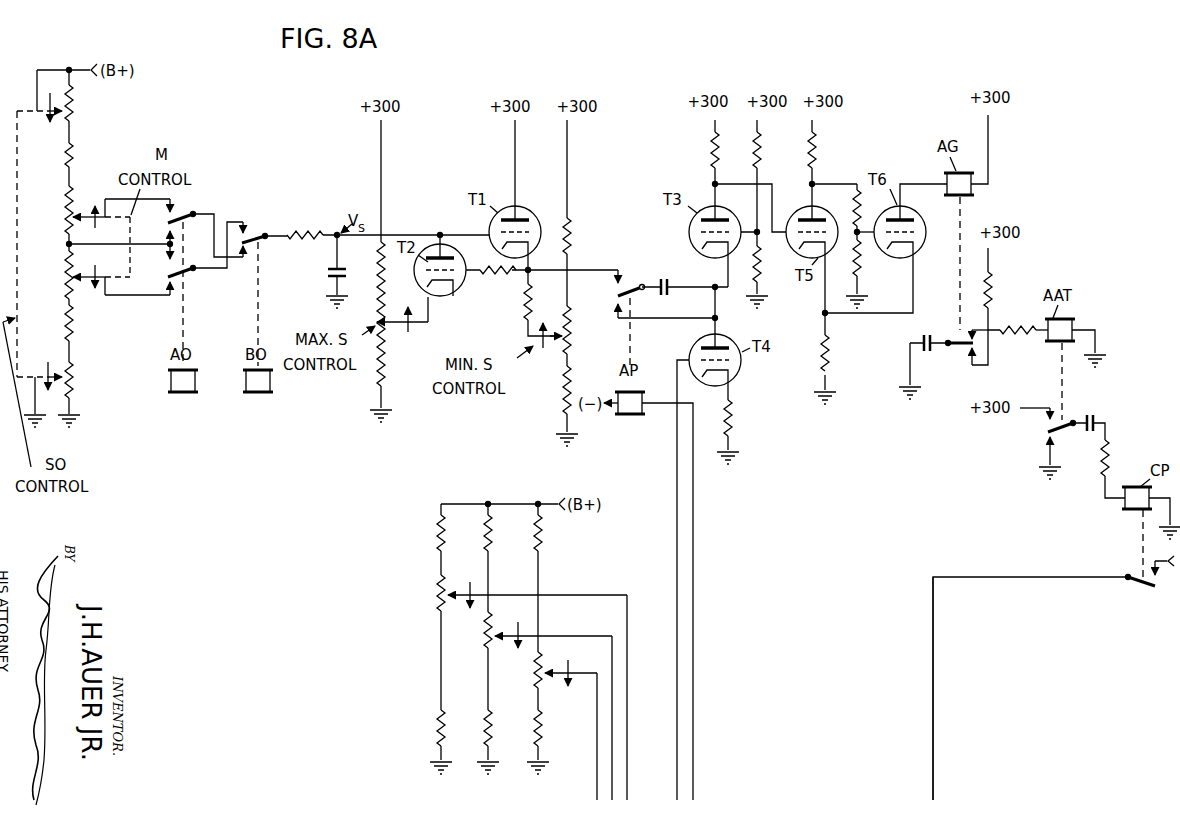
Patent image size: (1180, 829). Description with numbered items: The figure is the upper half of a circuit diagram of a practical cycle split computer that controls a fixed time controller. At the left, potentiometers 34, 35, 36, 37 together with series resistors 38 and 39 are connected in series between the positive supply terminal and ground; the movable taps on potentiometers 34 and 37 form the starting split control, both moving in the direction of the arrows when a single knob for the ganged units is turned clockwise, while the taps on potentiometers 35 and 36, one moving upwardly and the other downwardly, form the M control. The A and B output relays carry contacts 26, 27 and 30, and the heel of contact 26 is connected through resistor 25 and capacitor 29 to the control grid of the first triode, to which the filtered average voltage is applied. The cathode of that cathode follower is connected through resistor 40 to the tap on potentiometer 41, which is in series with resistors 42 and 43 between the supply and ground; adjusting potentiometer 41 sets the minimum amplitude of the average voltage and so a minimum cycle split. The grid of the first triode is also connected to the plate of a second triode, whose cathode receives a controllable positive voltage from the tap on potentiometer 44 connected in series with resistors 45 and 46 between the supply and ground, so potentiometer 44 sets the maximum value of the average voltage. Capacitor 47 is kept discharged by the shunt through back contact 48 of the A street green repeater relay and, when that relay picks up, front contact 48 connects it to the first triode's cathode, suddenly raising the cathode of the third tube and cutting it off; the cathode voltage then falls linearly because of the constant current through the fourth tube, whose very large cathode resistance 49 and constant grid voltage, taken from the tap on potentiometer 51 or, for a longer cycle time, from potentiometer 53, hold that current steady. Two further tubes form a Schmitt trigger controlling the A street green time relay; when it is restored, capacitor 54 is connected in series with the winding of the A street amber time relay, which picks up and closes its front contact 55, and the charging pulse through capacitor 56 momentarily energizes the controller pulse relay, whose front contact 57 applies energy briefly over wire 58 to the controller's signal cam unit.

The resistor 25 is at (303, 233).
The contact 26 is at (256, 232).
The contact 27 is at (190, 216).
The capacitor 29 is at (329, 271).
The contact 30 is at (184, 271).
The potentiometer 34 is at (76, 116).
The potentiometer 35 is at (64, 208).
The potentiometer 36 is at (64, 270).
The potentiometer 37 is at (76, 380).
The series resistor 38 is at (76, 158).
The series resistor 39 is at (64, 322).
The resistor 40 is at (527, 312).
The potentiometer 41 is at (574, 338).
The resistor 42 is at (576, 243).
The resistor 43 is at (561, 400).
The potentiometer 44 is at (388, 315).
The resistor 45 is at (372, 272).
The resistor 46 is at (386, 374).
The capacitor 47 is at (672, 285).
The contact of relay AP 48 is at (636, 292).
The cathode resistance 49 is at (737, 425).
The potentiometer 51 is at (532, 677).
The potentiometer 53 is at (484, 641).
The capacitor 54 is at (936, 330).
The front contact 55 is at (1062, 433).
The capacitor 56 is at (1098, 421).
The front contact 57 is at (1018, 336).
The wire 58 is at (935, 644).